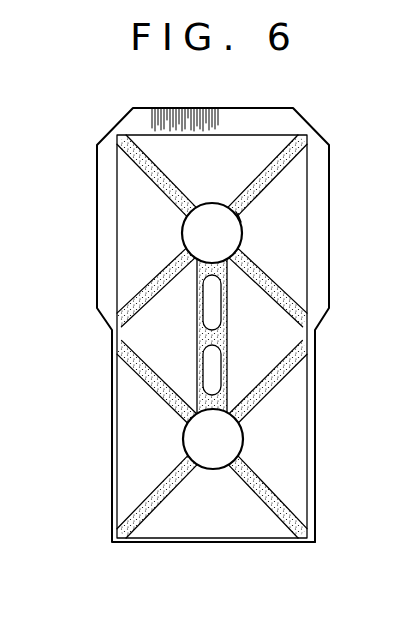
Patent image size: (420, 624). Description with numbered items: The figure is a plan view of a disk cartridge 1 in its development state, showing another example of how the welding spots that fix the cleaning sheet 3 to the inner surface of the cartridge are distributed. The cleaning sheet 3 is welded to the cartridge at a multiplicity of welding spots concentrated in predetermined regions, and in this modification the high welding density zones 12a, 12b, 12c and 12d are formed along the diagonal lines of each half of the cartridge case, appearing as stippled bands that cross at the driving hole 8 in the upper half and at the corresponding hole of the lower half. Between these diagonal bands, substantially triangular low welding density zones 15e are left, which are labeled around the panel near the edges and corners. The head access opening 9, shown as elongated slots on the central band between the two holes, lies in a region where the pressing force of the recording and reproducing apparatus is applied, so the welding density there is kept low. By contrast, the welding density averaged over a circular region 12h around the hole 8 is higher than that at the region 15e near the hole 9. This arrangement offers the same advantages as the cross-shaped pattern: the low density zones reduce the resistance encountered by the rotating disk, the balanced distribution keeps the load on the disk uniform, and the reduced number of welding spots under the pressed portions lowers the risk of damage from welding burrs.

The disk cartridge 1 is at (111, 333).
The cleaning sheet 3 is at (315, 462).
The driving hole 8 is at (238, 219).
The head access opening 9 is at (212, 358).
The high welding density zone 12a is at (155, 189).
The high welding density zone 12b is at (140, 282).
The high welding density zone 12c is at (284, 285).
The high welding density zone 12d is at (280, 181).
The circular region 12h is at (236, 222).
The low welding density zone 15e is at (213, 197).